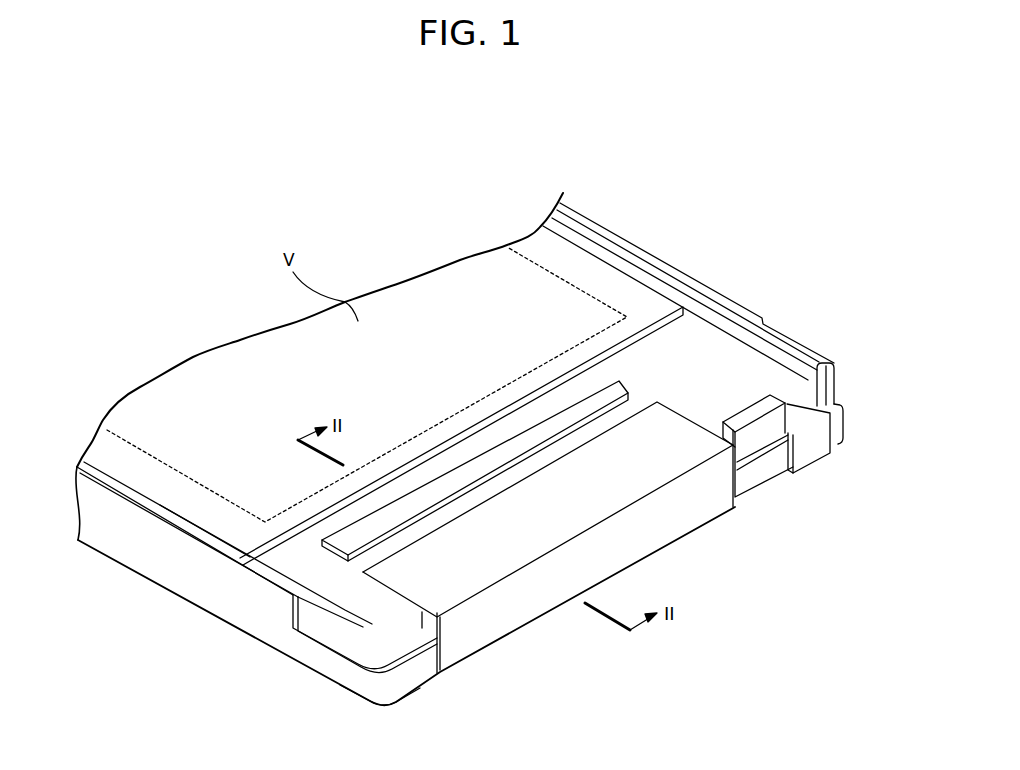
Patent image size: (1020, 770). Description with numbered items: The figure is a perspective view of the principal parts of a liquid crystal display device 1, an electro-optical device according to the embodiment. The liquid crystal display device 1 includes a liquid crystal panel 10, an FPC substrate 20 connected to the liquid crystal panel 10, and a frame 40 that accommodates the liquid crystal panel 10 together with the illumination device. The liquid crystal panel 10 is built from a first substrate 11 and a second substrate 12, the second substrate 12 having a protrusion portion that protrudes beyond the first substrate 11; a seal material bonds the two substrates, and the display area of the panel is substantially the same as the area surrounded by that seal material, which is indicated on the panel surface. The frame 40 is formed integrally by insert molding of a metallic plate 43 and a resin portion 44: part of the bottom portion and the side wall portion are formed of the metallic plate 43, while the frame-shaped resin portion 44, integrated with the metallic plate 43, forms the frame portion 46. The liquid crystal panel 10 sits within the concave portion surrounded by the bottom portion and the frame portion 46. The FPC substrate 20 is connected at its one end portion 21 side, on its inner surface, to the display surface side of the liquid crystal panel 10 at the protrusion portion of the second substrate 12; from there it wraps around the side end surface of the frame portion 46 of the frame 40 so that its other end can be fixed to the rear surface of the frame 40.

The liquid crystal display device 1 is at (724, 183).
The liquid crystal panel 10 is at (566, 276).
The first substrate 11 is at (611, 291).
The second substrate 12 is at (695, 345).
The FPC substrate 20 is at (655, 533).
The one end portion 21 is at (507, 500).
The frame 40 is at (182, 596).
The metallic plate 43 is at (247, 617).
The resin portion 44 is at (335, 614).
The frame portion 46 is at (397, 651).